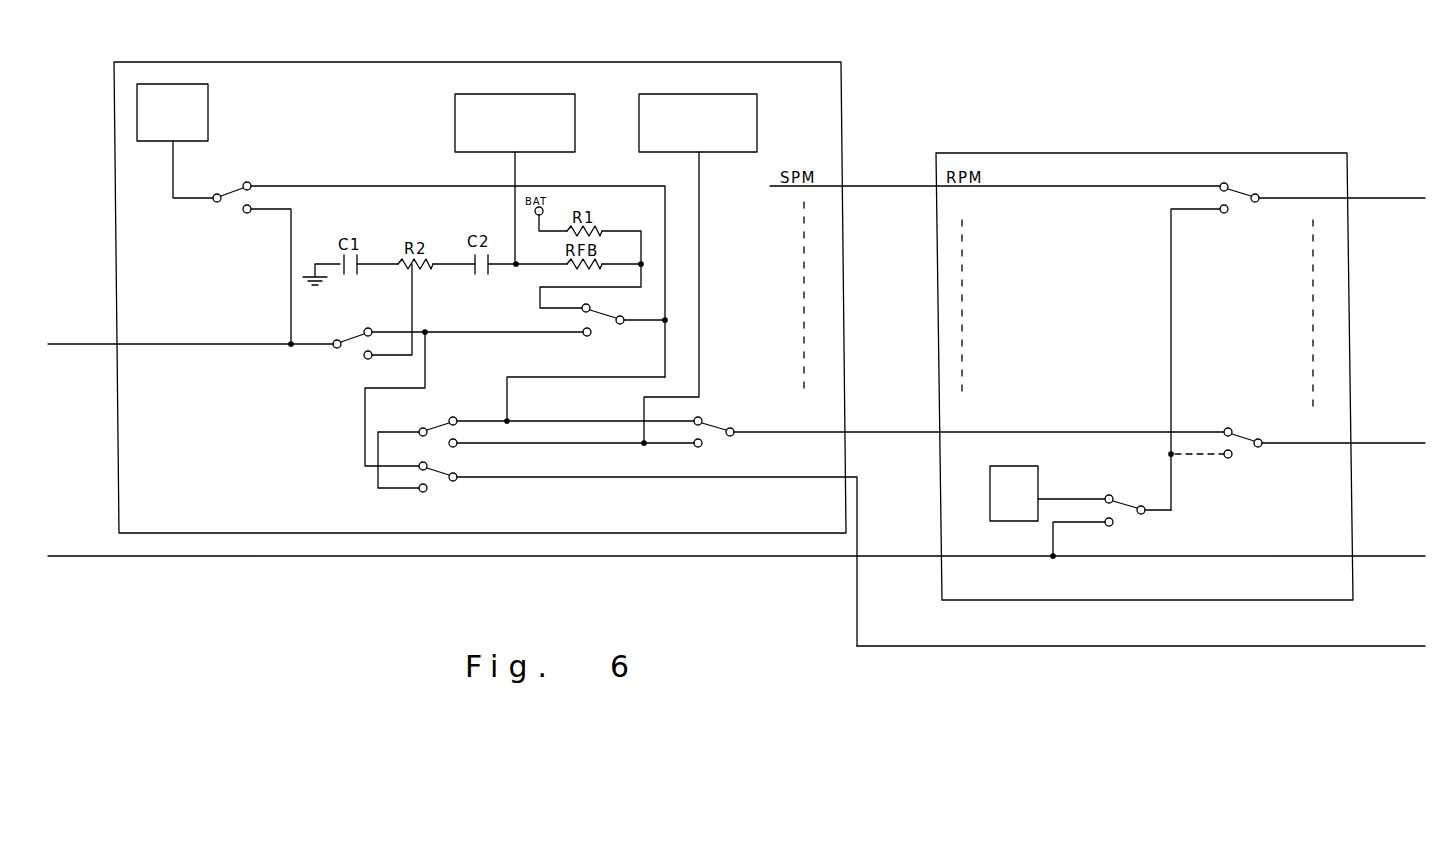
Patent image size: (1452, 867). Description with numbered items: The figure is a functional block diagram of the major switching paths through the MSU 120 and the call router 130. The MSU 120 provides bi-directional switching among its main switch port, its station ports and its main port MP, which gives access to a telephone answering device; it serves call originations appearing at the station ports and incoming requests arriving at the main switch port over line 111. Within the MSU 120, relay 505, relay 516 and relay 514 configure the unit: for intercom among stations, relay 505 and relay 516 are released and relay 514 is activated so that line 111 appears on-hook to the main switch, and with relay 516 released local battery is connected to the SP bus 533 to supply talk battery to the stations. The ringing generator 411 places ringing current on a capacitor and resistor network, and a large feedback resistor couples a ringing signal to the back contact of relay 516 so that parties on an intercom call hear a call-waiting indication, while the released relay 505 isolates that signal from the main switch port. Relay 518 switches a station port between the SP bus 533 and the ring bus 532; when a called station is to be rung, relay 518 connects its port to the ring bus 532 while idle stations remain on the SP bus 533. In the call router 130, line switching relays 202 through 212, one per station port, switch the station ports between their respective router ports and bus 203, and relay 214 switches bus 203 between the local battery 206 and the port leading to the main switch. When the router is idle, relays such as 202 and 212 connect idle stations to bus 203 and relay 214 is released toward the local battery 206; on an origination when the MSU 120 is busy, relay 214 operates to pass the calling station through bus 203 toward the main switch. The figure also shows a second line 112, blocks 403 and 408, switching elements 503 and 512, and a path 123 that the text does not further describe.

The MSU 120 is at (112, 207).
The line 111 is at (108, 343).
The central office line CO1 112 is at (110, 556).
The DTMF receiver 403 is at (208, 102).
The ringing generator 411 is at (577, 112).
The ringing signal source 408 is at (758, 112).
The switch 503 is at (419, 259).
The K3 relay 505 is at (462, 311).
The K5 relay 516 is at (624, 307).
The SP bus 533 is at (543, 373).
The switch 512 is at (540, 443).
The ring bus 532 is at (540, 448).
The K8 relay 514 is at (611, 489).
The K6 relay 518 is at (959, 419).
The call router 130 is at (1357, 593).
The line switching relay 212 is at (1322, 186).
The P2 bus 203 is at (1167, 242).
The line switching relay 202 is at (1300, 431).
The local battery 206 is at (1003, 465).
The relay 214 is at (1111, 518).
The TADO line 123 is at (1295, 646).